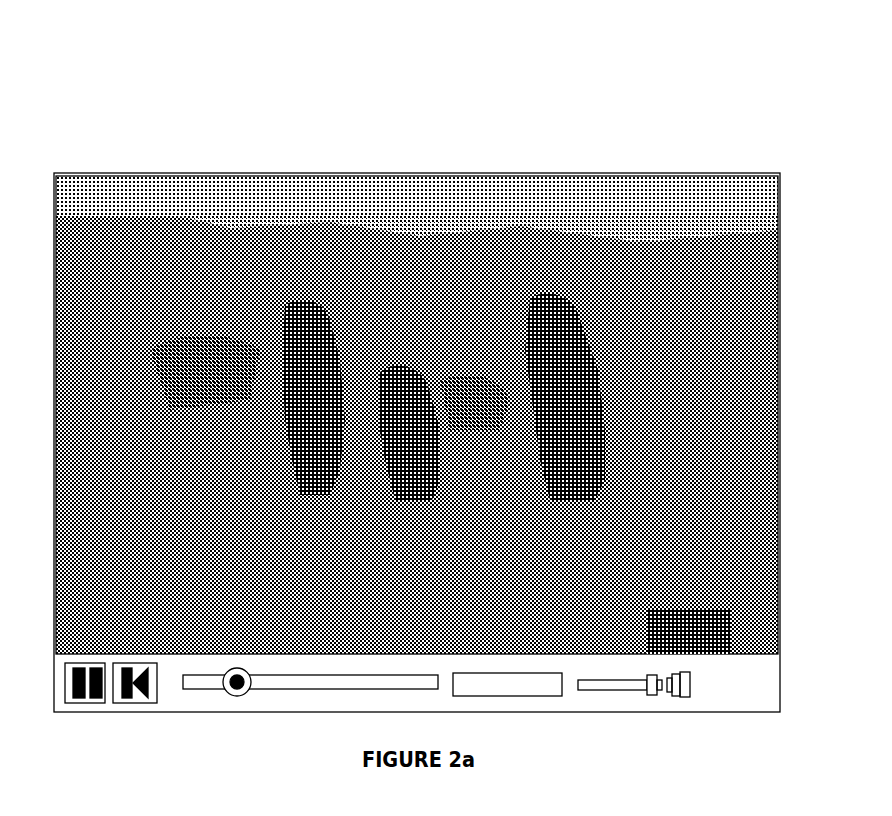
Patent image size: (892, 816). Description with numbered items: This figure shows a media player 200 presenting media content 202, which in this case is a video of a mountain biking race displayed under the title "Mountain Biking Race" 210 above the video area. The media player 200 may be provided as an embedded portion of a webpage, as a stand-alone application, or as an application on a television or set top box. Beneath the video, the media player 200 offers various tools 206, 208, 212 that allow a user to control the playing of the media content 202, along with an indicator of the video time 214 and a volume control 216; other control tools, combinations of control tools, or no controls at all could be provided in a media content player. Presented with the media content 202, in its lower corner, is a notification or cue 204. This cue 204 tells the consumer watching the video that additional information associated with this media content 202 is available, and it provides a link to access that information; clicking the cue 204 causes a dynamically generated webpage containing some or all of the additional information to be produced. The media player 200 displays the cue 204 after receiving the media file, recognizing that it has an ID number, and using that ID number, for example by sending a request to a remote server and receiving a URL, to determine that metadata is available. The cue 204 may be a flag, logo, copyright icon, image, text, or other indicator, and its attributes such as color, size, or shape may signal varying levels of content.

The media player 200 is at (430, 88).
The media content 202 is at (535, 197).
The notification or cue 204 is at (717, 655).
The control tool 206 is at (97, 703).
The control tool 208 is at (145, 703).
The title 210 is at (133, 140).
The control tool 212 is at (237, 696).
The indicator of the video time 214 is at (512, 696).
The volume control 216 is at (618, 687).